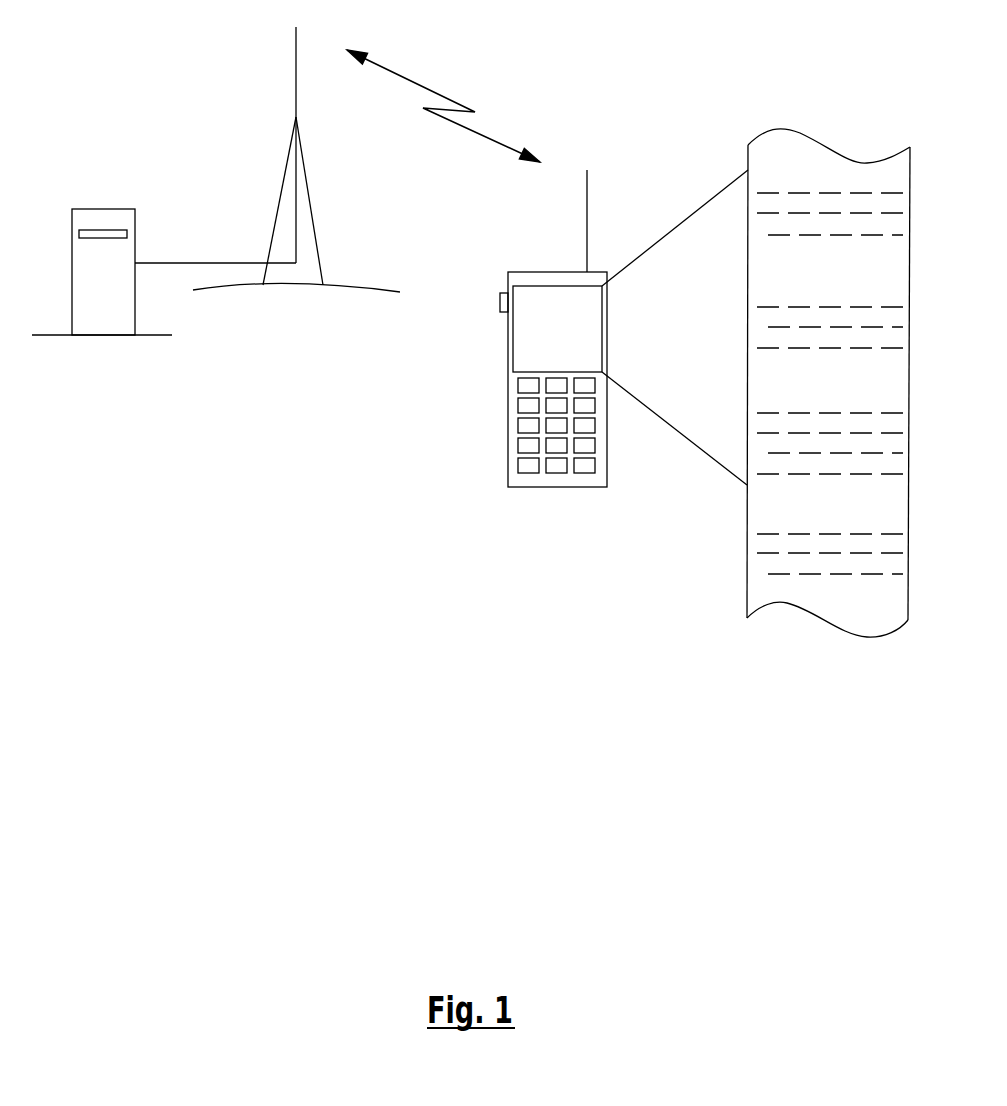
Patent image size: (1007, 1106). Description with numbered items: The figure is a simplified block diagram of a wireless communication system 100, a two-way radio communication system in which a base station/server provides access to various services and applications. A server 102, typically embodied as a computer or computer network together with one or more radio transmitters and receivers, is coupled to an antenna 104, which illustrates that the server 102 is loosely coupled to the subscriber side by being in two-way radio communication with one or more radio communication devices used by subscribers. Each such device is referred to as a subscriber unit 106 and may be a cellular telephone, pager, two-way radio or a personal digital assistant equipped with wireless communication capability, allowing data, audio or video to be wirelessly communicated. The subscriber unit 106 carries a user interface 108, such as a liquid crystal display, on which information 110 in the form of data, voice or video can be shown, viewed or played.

The wireless communication system 100 is at (375, 653).
The server 102 is at (102, 336).
The antenna 104 is at (313, 218).
The subscriber unit 106 is at (515, 395).
The user interface 108 is at (522, 338).
The information 110 is at (747, 545).